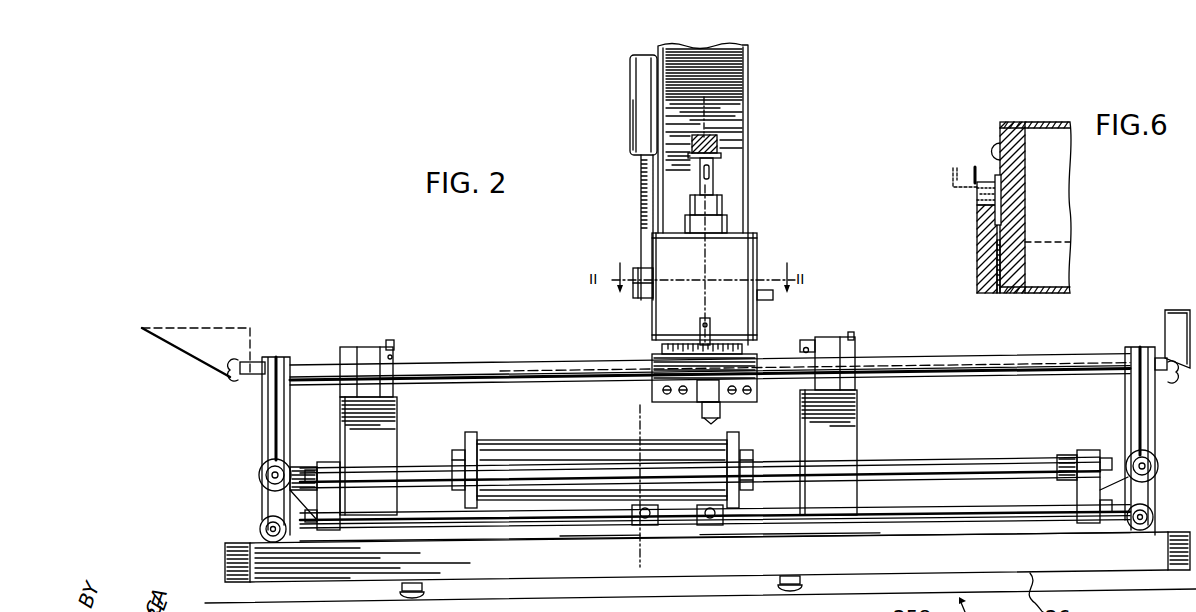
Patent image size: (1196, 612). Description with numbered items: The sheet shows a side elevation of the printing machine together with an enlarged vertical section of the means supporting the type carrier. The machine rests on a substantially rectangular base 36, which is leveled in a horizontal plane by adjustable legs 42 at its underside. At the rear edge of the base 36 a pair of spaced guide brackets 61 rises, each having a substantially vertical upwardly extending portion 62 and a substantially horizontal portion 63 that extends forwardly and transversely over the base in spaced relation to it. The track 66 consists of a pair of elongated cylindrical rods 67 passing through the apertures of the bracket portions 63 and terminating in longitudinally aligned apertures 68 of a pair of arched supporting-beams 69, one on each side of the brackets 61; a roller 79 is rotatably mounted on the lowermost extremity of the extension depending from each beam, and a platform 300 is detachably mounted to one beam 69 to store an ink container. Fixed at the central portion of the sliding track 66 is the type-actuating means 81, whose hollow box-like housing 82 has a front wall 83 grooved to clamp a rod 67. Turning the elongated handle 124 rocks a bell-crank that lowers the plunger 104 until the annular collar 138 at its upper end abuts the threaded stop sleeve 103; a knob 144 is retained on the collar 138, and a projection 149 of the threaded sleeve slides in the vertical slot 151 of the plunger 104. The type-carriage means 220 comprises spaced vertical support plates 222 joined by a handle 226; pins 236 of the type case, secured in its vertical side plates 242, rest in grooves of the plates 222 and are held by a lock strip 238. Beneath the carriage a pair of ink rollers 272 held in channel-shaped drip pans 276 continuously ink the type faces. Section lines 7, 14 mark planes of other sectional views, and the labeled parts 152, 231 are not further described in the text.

In FIG. 2, the cutter section line 7 is at (687, 119).
In FIG. 2, the section line 14- 14 is at (658, 422).
In FIG. 2, the base 36 is at (869, 536).
In FIG. 2, the adjustable legs 42 is at (423, 587).
In FIG. 2, the guide brackets 61 is at (367, 352).
In FIG. 2, the vertical upwardly extending portion 62 is at (383, 428).
In FIG. 2, the horizontal portion 63 is at (342, 336).
In FIG. 2, the track 66 is at (922, 357).
In FIG. 2, the rods 67 is at (987, 360).
In FIG. 2, the apertures 68 is at (287, 372).
In FIG. 2, the arched supporting-beams 69 is at (290, 353).
In FIG. 2, the roller 79 is at (258, 528).
In FIG. 2, the type-actuating means 81 is at (749, 274).
In FIG. 2, the housing 82 is at (663, 310).
In FIG. 2, the front wall 83 is at (718, 325).
In FIG. 2, the threaded stop sleeve 103 is at (720, 207).
In FIG. 2, the plunger 104 is at (713, 185).
In FIG. 2, the handle 124 is at (645, 203).
In FIG. 2, the annular collar 138 is at (718, 147).
In FIG. 2, the knob 144 is at (717, 137).
In FIG. 2, the projection 149 is at (657, 153).
In FIG. 2, the vertical slot 151 is at (700, 158).
In FIG. 2, the pin 152 is at (708, 163).
In FIG. 2, the type-carriage means 220 is at (531, 432).
In FIG. 6, the type-carriage means 220 is at (1007, 124).
In FIG. 6, the support plates 222 is at (980, 240).
In FIG. 2, the handle 226 is at (555, 470).
In FIG. 2, the clamp rod 231 is at (300, 465).
In FIG. 6, the pins 236 is at (978, 205).
In FIG. 6, the lock strip 238 is at (975, 168).
In FIG. 6, the side plates 242 is at (1013, 185).
In FIG. 2, the ink rollers 272 is at (638, 518).
In FIG. 2, the drip pans 276 is at (465, 487).
In FIG. 2, the platform 300 is at (240, 330).